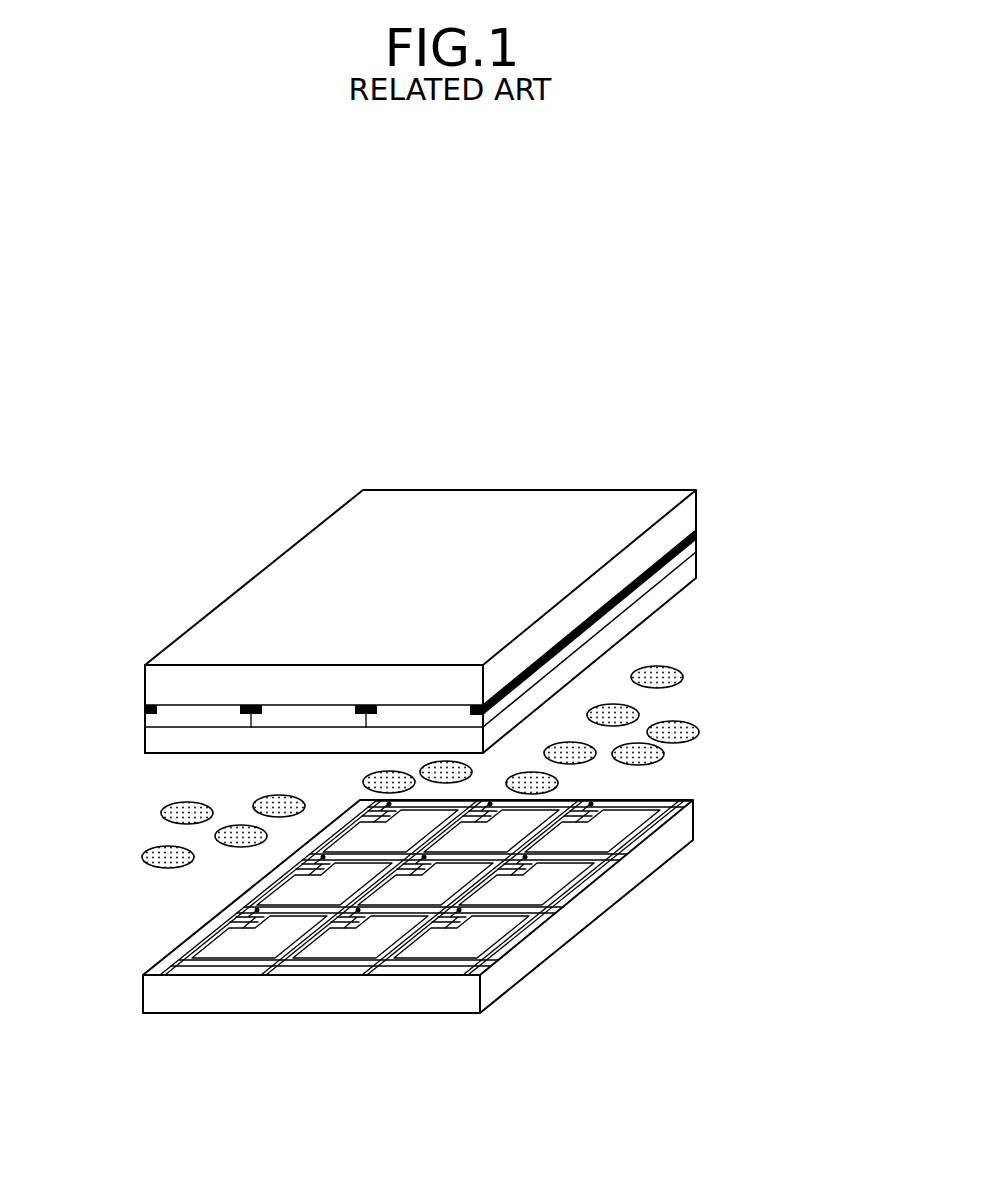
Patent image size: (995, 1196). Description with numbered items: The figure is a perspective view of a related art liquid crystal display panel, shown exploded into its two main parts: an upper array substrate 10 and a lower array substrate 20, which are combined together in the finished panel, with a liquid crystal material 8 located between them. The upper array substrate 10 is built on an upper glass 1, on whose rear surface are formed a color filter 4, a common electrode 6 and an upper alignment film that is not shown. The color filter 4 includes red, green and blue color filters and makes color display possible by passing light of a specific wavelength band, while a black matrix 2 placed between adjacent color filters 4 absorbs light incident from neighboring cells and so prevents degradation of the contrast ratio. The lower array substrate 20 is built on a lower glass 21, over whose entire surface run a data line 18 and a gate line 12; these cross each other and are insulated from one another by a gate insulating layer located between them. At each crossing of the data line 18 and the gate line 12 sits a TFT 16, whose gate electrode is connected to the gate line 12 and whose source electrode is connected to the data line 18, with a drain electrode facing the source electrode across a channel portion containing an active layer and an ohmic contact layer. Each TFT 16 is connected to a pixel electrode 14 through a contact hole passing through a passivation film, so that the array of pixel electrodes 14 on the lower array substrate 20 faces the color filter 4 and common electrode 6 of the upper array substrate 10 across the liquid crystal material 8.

The upper array substrate 10 is at (463, 595).
The upper glass 1 is at (694, 516).
The black matrix 2 is at (146, 708).
The color filter 4 is at (694, 547).
The common electrode 6 is at (694, 571).
The liquid crystal material 8 is at (680, 677).
The lower array substrate 20 is at (464, 960).
The lower glass 21 is at (683, 833).
The gate line 12 is at (657, 801).
The pixel electrode 14 is at (488, 933).
The TFT 16 is at (457, 933).
The data line 18 is at (194, 952).